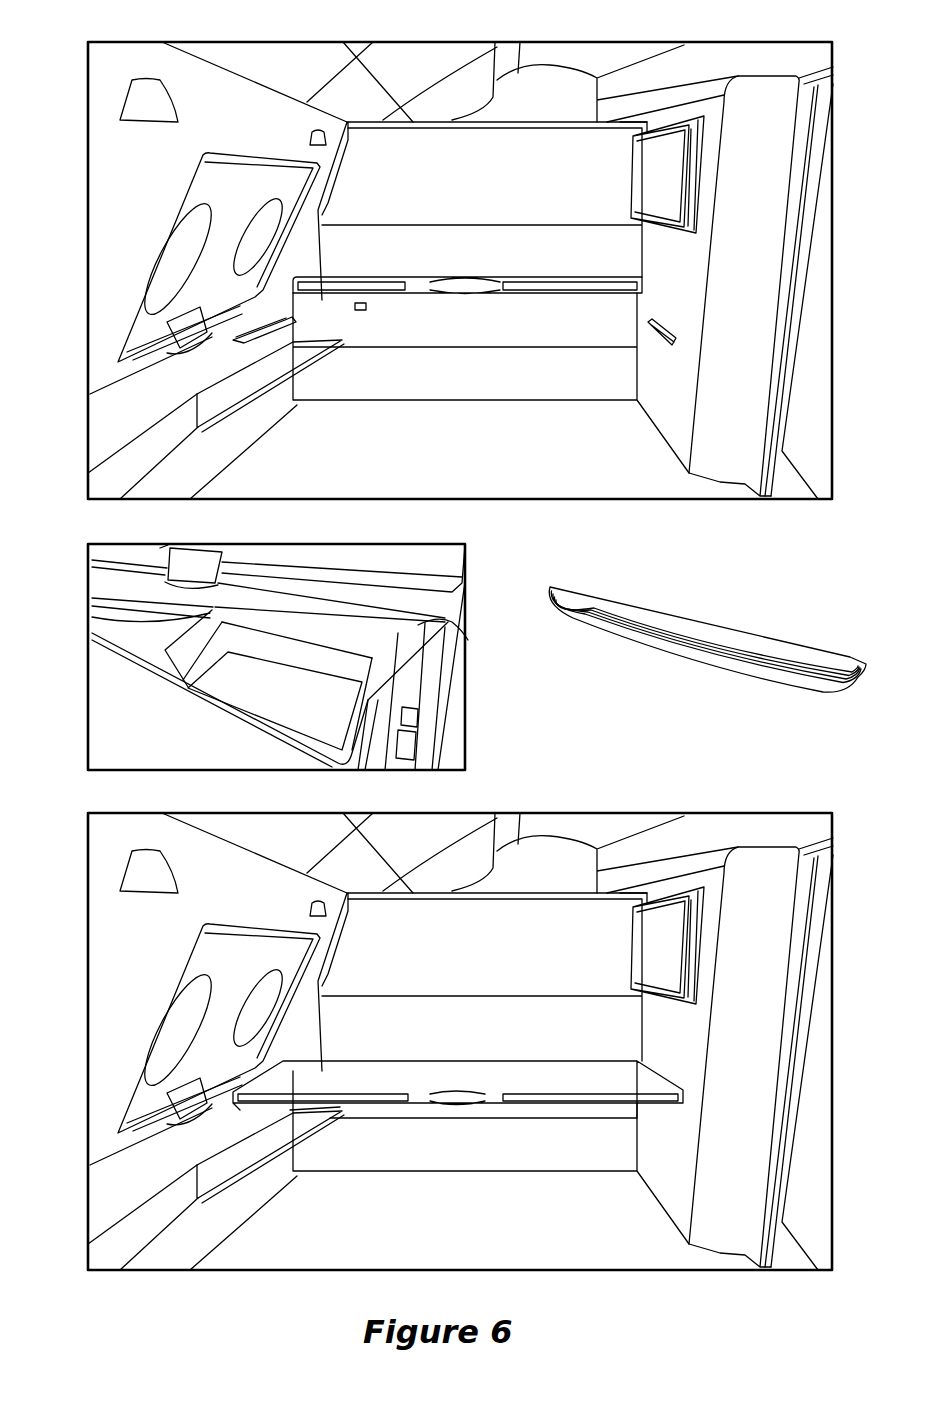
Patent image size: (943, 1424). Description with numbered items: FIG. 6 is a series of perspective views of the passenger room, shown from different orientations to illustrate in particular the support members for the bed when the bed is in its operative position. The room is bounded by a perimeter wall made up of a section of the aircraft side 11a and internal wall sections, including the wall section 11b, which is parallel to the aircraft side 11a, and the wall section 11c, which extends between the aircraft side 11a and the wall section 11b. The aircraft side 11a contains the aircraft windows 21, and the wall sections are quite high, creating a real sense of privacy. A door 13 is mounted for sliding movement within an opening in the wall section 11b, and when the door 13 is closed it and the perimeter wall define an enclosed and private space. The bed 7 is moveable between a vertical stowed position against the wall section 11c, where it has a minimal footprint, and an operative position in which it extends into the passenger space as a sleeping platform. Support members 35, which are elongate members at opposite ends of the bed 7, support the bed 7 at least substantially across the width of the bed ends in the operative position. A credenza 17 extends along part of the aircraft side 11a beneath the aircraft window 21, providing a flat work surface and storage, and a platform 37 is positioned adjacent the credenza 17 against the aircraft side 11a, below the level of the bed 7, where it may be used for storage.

The bed 7 is at (288, 1082).
The section of a side of the aircraft 11a is at (122, 170).
The wall section 11b is at (782, 246).
The wall section 11c is at (535, 142).
The door 13 is at (818, 395).
The credenza 17 is at (122, 1183).
The aircraft window 21 is at (175, 263).
The support member 35 is at (277, 330).
The platform 37 is at (308, 350).